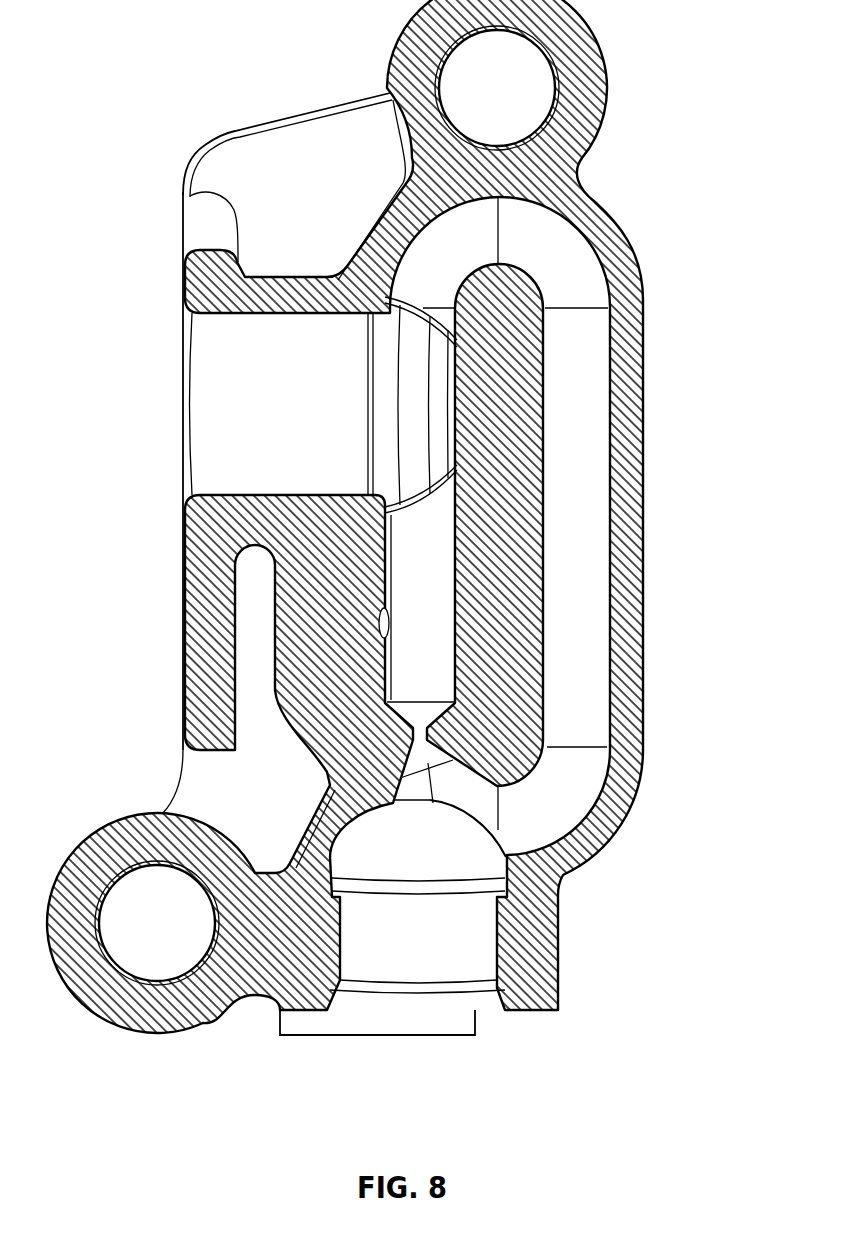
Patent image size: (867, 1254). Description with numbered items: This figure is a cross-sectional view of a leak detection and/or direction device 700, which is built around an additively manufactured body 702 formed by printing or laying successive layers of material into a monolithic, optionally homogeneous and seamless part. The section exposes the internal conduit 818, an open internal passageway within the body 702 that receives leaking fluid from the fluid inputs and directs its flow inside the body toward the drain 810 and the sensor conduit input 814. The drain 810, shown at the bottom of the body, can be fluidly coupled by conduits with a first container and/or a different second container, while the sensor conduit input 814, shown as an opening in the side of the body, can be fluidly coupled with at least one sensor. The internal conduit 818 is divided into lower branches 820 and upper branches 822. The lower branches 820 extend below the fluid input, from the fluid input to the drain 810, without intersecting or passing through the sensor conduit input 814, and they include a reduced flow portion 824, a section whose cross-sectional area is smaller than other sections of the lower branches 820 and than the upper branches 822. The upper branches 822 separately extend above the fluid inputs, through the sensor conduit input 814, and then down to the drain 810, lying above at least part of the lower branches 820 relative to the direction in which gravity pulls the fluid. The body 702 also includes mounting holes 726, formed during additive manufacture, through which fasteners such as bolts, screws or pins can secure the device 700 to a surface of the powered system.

The leak detection and/or direction device 700 is at (163, 72).
The additively manufactured body 702 is at (262, 131).
The mounting holes 726 is at (527, 99).
The sensor conduit input 814 is at (183, 405).
The upper branches 822 is at (290, 428).
The internal conduit 818 is at (375, 543).
The reduced flow portion 824 is at (400, 734).
The lower branches 820 is at (425, 736).
The drain 810 is at (410, 1003).